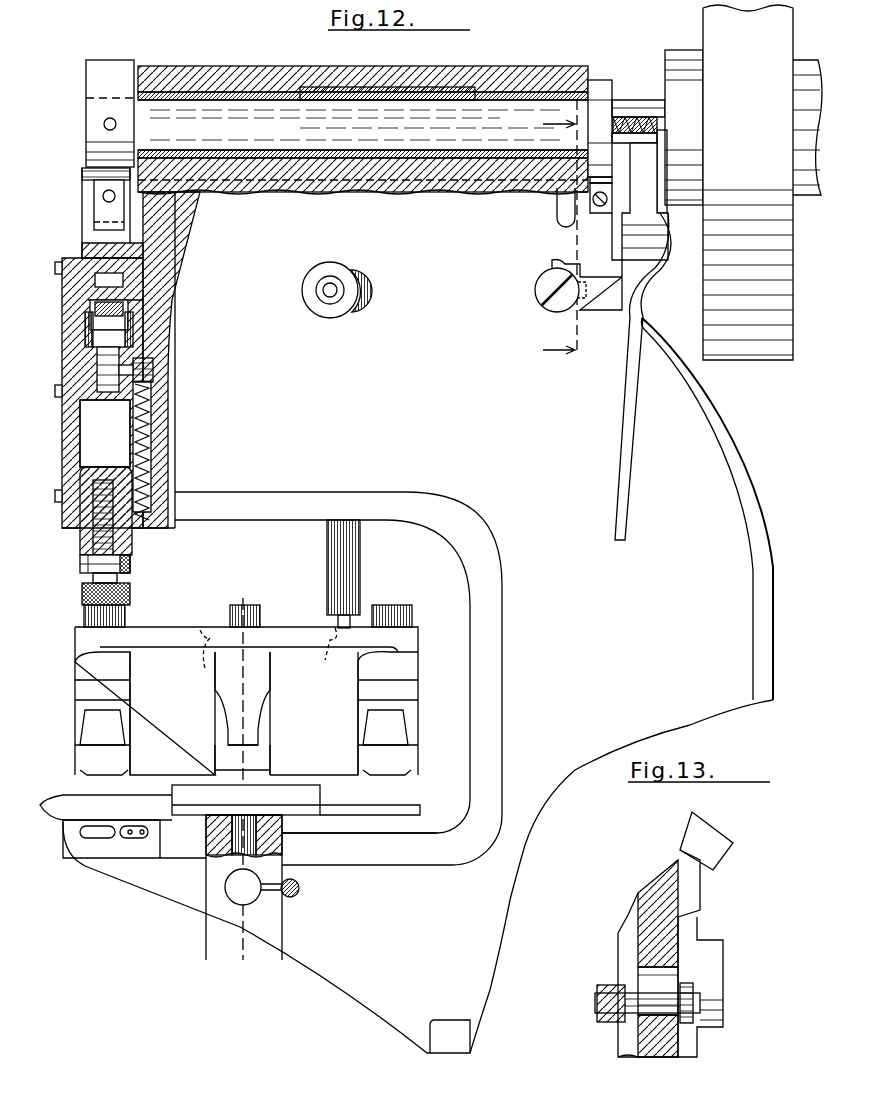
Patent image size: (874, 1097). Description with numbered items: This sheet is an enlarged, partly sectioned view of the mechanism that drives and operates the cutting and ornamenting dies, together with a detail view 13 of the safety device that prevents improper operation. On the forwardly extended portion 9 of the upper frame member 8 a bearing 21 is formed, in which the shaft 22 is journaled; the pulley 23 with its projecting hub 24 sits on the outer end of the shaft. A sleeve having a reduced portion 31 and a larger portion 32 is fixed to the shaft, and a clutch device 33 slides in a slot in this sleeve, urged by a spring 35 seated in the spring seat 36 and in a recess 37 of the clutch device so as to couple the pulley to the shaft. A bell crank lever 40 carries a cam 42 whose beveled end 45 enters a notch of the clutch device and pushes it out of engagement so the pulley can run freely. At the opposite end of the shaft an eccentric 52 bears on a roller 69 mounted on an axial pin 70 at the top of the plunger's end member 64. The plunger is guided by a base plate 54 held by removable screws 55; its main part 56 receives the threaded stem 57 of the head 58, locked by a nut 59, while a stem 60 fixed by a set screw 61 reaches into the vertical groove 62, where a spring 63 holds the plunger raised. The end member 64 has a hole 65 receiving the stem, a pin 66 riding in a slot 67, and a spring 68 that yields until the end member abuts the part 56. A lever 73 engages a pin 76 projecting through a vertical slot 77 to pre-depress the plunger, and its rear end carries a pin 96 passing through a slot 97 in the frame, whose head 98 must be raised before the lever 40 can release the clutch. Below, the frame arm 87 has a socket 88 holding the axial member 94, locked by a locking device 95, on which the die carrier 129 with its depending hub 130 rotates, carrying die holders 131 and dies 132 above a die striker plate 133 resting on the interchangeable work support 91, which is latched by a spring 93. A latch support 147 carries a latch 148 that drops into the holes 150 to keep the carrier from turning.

In FIG. 12, the upper frame member 8 is at (738, 612).
In FIG. 13, the upper frame member 8 is at (652, 907).
In FIG. 12, the forwardly extended portion of the frame 9 is at (205, 215).
In FIG. 12, the section line 13 is at (544, 230).
In FIG. 12, the bearing 21 is at (497, 78).
In FIG. 12, the shaft 22 is at (355, 112).
In FIG. 12, the pulley 23 is at (780, 42).
In FIG. 12, the hub 24 is at (812, 196).
In FIG. 12, the sleeve portion of reduced diameter 31 is at (600, 80).
In FIG. 12, the sleeve portion of larger diameter 32 is at (690, 65).
In FIG. 12, the clutch device 33 is at (652, 117).
In FIG. 12, the spring 35 is at (622, 117).
In FIG. 12, the spring seat 36 is at (595, 100).
In FIG. 12, the recess 37 is at (637, 117).
In FIG. 12, the bell crank lever 40 is at (641, 190).
In FIG. 13, the bell crank lever 40 is at (702, 890).
In FIG. 12, the cam 42 is at (660, 152).
In FIG. 13, the cam 42 is at (760, 850).
In FIG. 12, the beveled end 45 is at (655, 130).
In FIG. 12, the eccentric 52 is at (100, 78).
In FIG. 12, the base plate 54 is at (105, 428).
In FIG. 12, the removable screws 55 is at (62, 278).
In FIG. 12, the plunger part 56 is at (115, 440).
In FIG. 12, the threaded stem 57 is at (100, 518).
In FIG. 12, the head 58 is at (84, 590).
In FIG. 12, the nut 59 is at (130, 566).
In FIG. 12, the stem 60 is at (108, 370).
In FIG. 12, the set screw 61 is at (154, 372).
In FIG. 12, the vertical groove 62 is at (153, 390).
In FIG. 12, the spring 63 is at (150, 455).
In FIG. 12, the end member 64 is at (95, 233).
In FIG. 12, the hole 65 is at (95, 288).
In FIG. 12, the pin 66 is at (95, 312).
In FIG. 12, the slot 67 is at (85, 340).
In FIG. 12, the spring 68 is at (95, 344).
In FIG. 12, the roller 69 is at (82, 178).
In FIG. 12, the axial pin 70 is at (94, 212).
In FIG. 13, the lever 73 is at (605, 1025).
In FIG. 12, the pin 76 is at (627, 412).
In FIG. 12, the vertical slot 77 is at (322, 300).
In FIG. 12, the forwardly extending arm 87 is at (360, 968).
In FIG. 12, the socket 88 is at (222, 905).
In FIG. 12, the work support 91 is at (48, 826).
In FIG. 12, the spring 93 is at (95, 834).
In FIG. 12, the axial member 94 is at (285, 828).
In FIG. 12, the locking device 95 is at (238, 890).
In FIG. 13, the pin 96 is at (650, 1050).
In FIG. 12, the slot 97 is at (562, 272).
In FIG. 13, the slot 97 is at (640, 980).
In FIG. 12, the head 98 is at (548, 300).
In FIG. 13, the head 98 is at (692, 995).
In FIG. 12, the die carrier 129 is at (205, 602).
In FIG. 12, the depending hub 130 is at (282, 722).
In FIG. 12, the die holders 131 is at (88, 615).
In FIG. 12, the dies 132 is at (118, 762).
In FIG. 12, the die striker plate 133 is at (397, 818).
In FIG. 12, the latch support 147 is at (340, 545).
In FIG. 12, the latch 148 is at (338, 622).
In FIG. 12, the cavities or holes 150 is at (205, 670).